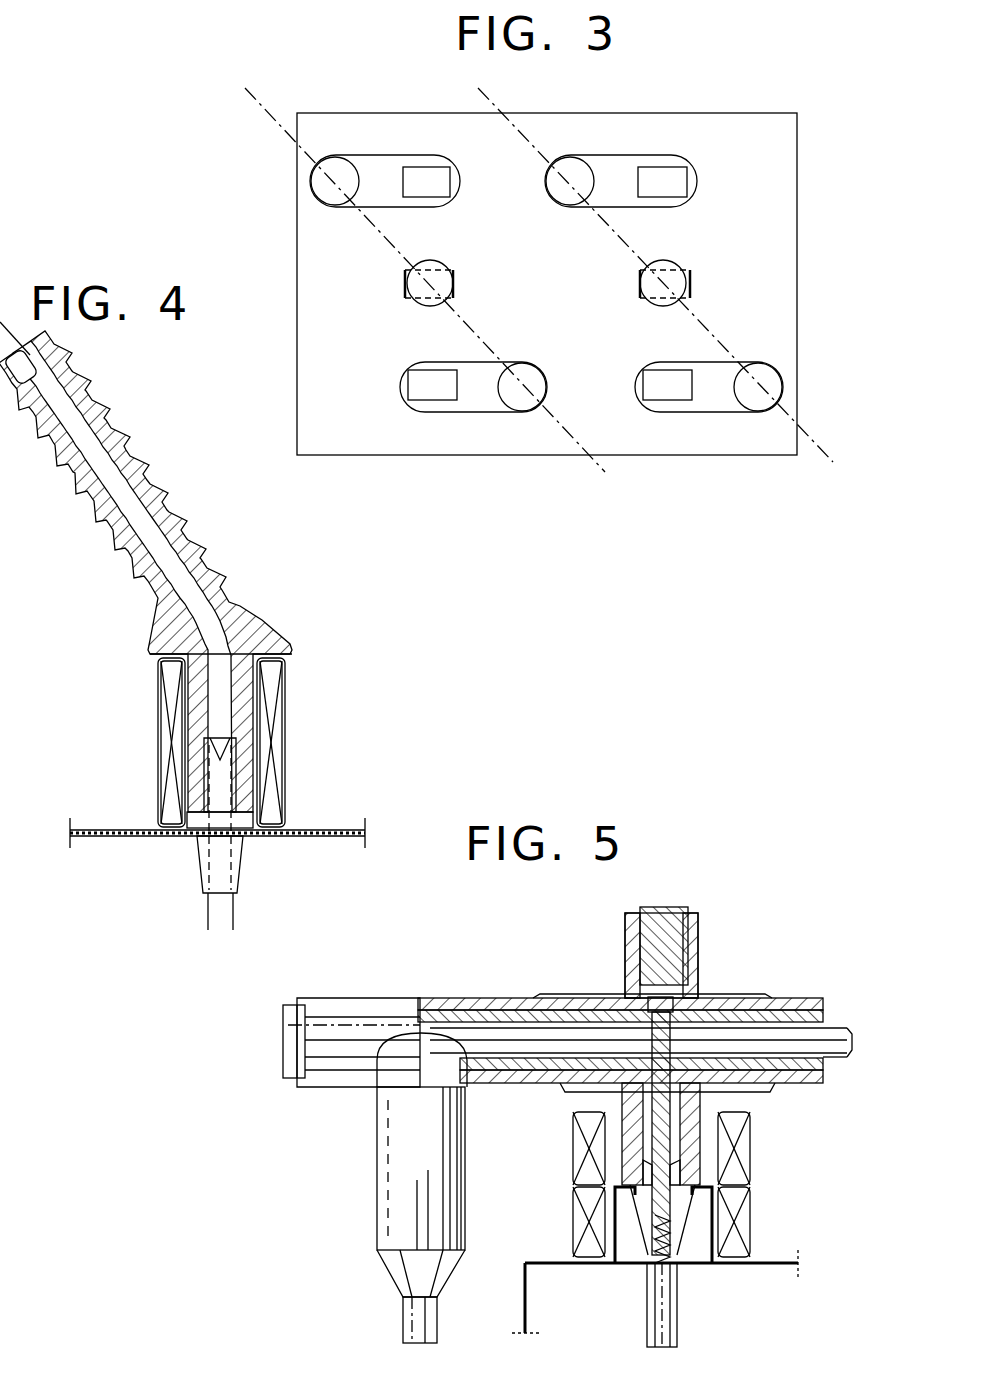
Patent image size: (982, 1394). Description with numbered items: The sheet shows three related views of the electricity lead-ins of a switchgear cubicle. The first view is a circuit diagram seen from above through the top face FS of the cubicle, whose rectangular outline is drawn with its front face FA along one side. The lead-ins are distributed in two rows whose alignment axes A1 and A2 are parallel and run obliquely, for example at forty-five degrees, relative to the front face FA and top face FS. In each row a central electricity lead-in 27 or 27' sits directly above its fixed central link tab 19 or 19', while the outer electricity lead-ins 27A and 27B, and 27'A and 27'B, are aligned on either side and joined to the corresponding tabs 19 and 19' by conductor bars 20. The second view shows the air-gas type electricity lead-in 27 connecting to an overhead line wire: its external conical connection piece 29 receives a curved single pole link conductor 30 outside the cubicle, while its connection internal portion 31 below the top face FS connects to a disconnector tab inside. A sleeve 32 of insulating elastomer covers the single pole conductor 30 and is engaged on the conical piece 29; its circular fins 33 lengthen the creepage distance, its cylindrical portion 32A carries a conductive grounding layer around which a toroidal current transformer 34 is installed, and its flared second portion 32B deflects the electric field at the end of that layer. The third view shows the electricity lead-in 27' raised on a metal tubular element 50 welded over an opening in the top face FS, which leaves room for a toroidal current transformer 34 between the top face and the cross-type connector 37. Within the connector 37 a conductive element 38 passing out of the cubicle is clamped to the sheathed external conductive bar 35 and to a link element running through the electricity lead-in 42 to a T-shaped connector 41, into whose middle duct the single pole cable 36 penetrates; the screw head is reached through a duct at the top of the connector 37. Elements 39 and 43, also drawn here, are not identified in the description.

In FIG. 3, the fixed central link tab 19 is at (421, 310).
In FIG. 3, the central link tab 19' is at (657, 310).
In FIG. 3, the conductor bars 20 is at (388, 172).
In FIG. 3, the electricity lead-in 27 is at (445, 263).
In FIG. 4, the electricity lead-in 27 is at (138, 893).
In FIG. 3, the electricity lead-in 27' is at (683, 263).
In FIG. 5, the electricity lead-in 27' is at (703, 1238).
In FIG. 3, the electricity lead-in 27A is at (337, 172).
In FIG. 3, the electricity lead-in 27'A is at (583, 162).
In FIG. 3, the electricity lead-in 27B is at (530, 378).
In FIG. 3, the electricity lead-in 27'B is at (748, 365).
In FIG. 3, the front face FA is at (297, 232).
In FIG. 3, the top face FS is at (767, 133).
In FIG. 4, the top face FS is at (95, 827).
In FIG. 5, the top face FS is at (536, 1252).
In FIG. 3, the alignment axis A1 is at (597, 463).
In FIG. 3, the alignment axis A2 is at (825, 447).
In FIG. 4, the external conical connection piece 29 is at (220, 773).
In FIG. 4, the single pole link conductor 30 is at (193, 573).
In FIG. 4, the connection internal portion 31 is at (225, 853).
In FIG. 4, the sleeve 32 is at (172, 608).
In FIG. 4, the cylindrical portion 32A is at (197, 705).
In FIG. 4, the flared second portion 32B is at (257, 632).
In FIG. 4, the circular fins 33 is at (120, 445).
In FIG. 4, the toroidal current transformer 34 is at (272, 702).
In FIG. 5, the conductive bar 35 is at (832, 1035).
In FIG. 5, the single pole cable 36 is at (415, 1322).
In FIG. 5, the connector 37 is at (700, 990).
In FIG. 5, the conductive element 38 is at (643, 1145).
In FIG. 5, the boss 39 is at (625, 1000).
In FIG. 5, the connector 41 is at (365, 1035).
In FIG. 5, the electricity lead-in 42 is at (508, 1003).
In FIG. 5, the coil 43 is at (752, 1215).
In FIG. 5, the metal tubular element 50 is at (715, 1200).